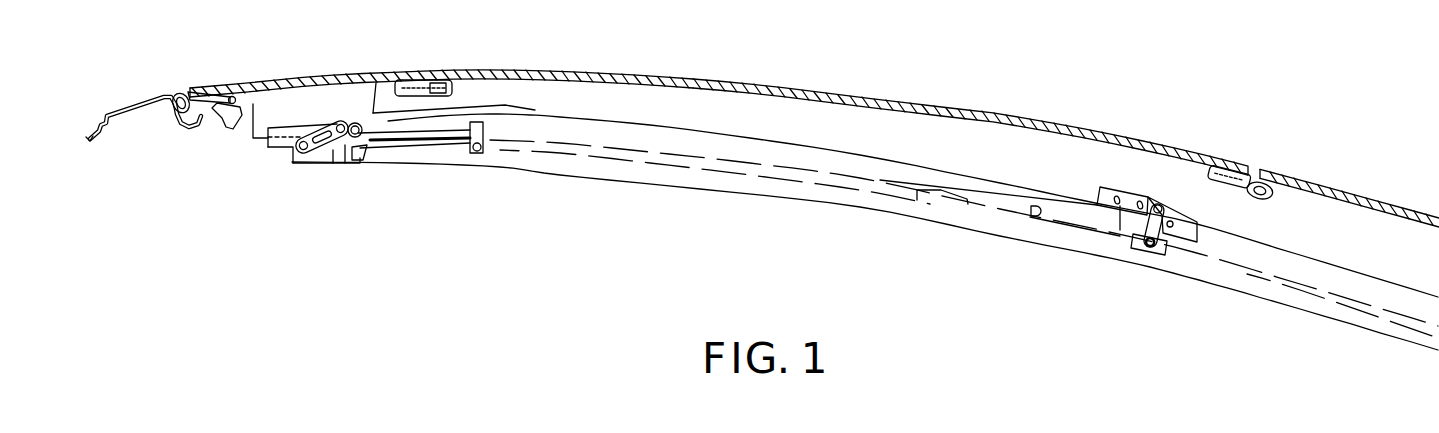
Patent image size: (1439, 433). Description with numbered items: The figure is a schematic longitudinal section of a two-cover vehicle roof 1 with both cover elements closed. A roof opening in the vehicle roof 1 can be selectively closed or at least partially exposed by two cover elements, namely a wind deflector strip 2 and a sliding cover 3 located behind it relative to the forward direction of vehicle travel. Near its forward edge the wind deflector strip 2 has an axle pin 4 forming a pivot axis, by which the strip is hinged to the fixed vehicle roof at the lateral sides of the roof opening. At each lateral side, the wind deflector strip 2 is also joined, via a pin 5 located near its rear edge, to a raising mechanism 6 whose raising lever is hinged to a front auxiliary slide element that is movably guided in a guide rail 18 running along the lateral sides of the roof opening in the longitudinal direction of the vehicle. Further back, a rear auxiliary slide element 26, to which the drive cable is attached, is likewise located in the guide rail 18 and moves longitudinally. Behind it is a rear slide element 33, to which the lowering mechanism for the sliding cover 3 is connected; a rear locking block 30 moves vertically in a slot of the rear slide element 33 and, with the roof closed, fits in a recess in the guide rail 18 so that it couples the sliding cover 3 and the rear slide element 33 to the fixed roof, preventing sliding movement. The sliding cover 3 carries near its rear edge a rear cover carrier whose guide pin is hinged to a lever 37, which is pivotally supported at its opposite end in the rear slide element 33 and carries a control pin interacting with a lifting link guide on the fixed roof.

The vehicle roof 1 is at (1293, 149).
The wind deflector strip 2 is at (306, 73).
The sliding cover 3 is at (916, 102).
The axle pin 4 is at (218, 112).
The pin 5 is at (364, 163).
The raising mechanism 6 is at (323, 167).
The guide rail 18 is at (628, 171).
The rear auxiliary slide element 26 is at (952, 203).
The rear locking block 30 is at (1034, 219).
The rear slide element 33 is at (1115, 234).
The lever 37 is at (1138, 255).